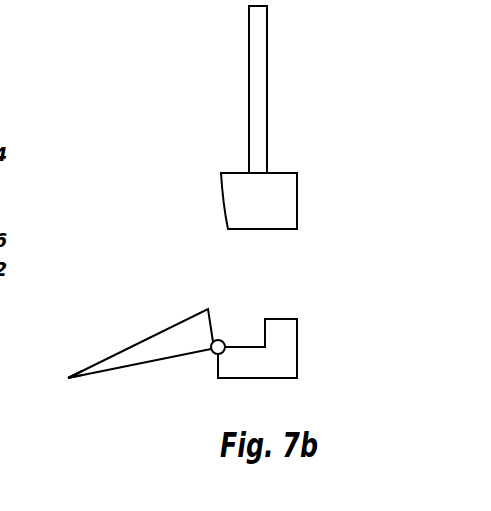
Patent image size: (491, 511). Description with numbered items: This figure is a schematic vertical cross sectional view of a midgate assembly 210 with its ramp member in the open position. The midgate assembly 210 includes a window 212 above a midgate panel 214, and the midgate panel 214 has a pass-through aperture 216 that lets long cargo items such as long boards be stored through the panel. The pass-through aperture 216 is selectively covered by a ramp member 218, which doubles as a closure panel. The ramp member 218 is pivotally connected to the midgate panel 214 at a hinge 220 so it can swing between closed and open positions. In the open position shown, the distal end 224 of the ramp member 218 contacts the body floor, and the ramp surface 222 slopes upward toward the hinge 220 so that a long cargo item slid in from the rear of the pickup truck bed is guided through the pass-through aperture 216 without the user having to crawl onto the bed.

The midgate assembly 210 is at (243, 128).
The window 212 is at (248, 110).
The midgate panel 214 is at (297, 193).
The pass-through aperture 216 is at (278, 229).
The ramp member 218 is at (138, 364).
The hinge 220 is at (211, 354).
The ramp surface 222 is at (157, 333).
The distal end 224 is at (67, 377).